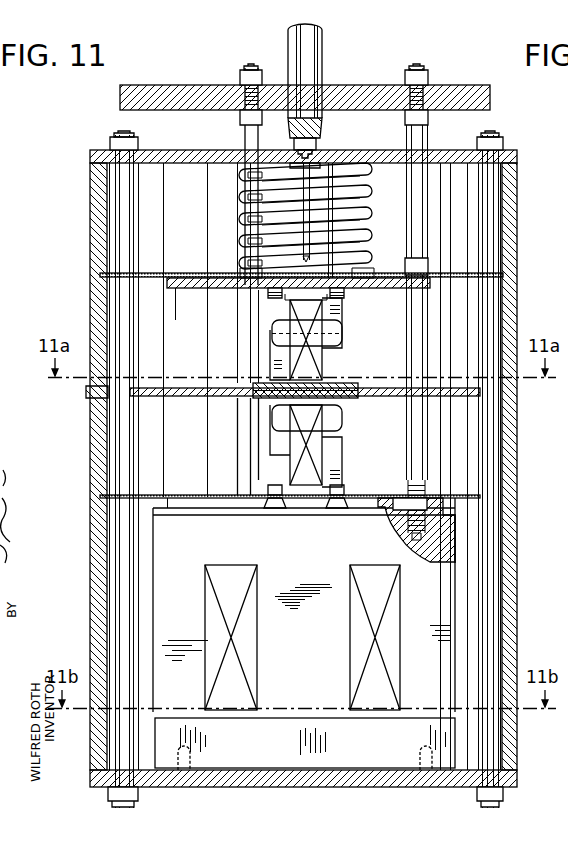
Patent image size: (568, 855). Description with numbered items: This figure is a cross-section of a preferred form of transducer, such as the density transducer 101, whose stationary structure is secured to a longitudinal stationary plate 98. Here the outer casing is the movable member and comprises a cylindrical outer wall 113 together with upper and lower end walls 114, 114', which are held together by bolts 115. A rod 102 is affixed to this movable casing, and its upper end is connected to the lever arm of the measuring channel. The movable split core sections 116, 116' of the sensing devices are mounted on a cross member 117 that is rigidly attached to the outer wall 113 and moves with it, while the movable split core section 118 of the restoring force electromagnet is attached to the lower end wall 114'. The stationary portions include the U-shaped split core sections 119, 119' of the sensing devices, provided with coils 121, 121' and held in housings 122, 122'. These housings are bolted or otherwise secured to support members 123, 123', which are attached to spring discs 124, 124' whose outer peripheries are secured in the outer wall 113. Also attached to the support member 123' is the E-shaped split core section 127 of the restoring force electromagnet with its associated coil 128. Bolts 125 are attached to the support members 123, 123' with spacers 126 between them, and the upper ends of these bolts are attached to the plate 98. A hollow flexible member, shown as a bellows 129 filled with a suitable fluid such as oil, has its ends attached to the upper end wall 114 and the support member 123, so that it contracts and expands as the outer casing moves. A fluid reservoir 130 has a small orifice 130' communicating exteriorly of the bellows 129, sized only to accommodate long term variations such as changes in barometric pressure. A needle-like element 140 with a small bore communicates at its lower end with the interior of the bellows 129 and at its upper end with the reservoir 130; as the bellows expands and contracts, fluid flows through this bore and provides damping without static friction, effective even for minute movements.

The longitudinal stationary plate 98 is at (346, 100).
The density transducer 101 is at (98, 223).
The rod 102 is at (318, 38).
The cylindrical outer wall 113 is at (100, 318).
The upper end wall 114 is at (303, 141).
The lower end wall 114' is at (303, 792).
The bolts 115 is at (120, 288).
The movable split core section 116 is at (284, 374).
The movable split core section 116' is at (169, 400).
The cross member 117 is at (158, 392).
The movable split core section 118 is at (368, 748).
The U-shaped split core section 119 is at (268, 273).
The U-shaped split core section 119' is at (263, 453).
The coil 121 is at (327, 340).
The coil 121' is at (326, 443).
The housing 122 is at (326, 337).
The housing 122' is at (325, 446).
The support member 123 is at (298, 292).
The support member 123' is at (304, 490).
The spring disc 124 is at (174, 305).
The spring disc 124' is at (169, 479).
The bolts 125 is at (240, 130).
The spacers 126 is at (431, 332).
The E-shaped split core section 127 is at (154, 513).
The coil 128 is at (217, 568).
The bellows 129 is at (240, 221).
The fluid reservoir 130 is at (324, 126).
The orifice 130' is at (327, 144).
The needle-like element 140 is at (250, 183).